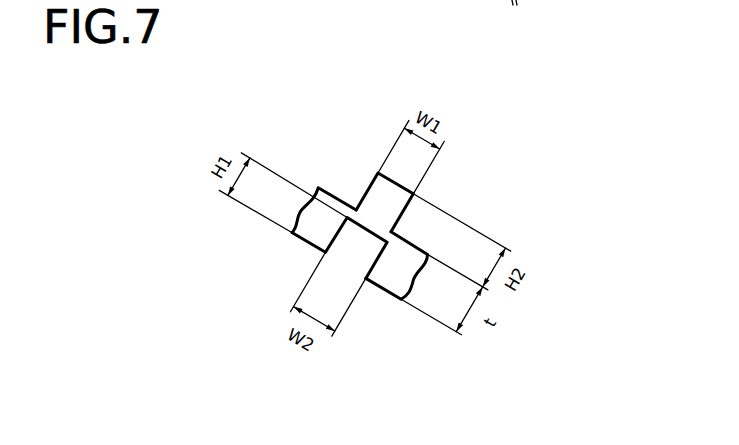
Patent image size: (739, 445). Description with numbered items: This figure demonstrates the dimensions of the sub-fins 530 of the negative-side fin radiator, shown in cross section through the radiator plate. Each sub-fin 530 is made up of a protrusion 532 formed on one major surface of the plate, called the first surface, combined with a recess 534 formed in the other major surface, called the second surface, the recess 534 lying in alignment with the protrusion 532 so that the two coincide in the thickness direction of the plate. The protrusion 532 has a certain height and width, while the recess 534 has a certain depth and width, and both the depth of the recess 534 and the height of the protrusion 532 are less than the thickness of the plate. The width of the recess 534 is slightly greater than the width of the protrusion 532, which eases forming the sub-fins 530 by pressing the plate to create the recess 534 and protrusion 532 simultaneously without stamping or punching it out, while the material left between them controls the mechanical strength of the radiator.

The sub-fin 530 is at (352, 193).
The protrusion 532 is at (376, 180).
The recess 534 is at (357, 248).